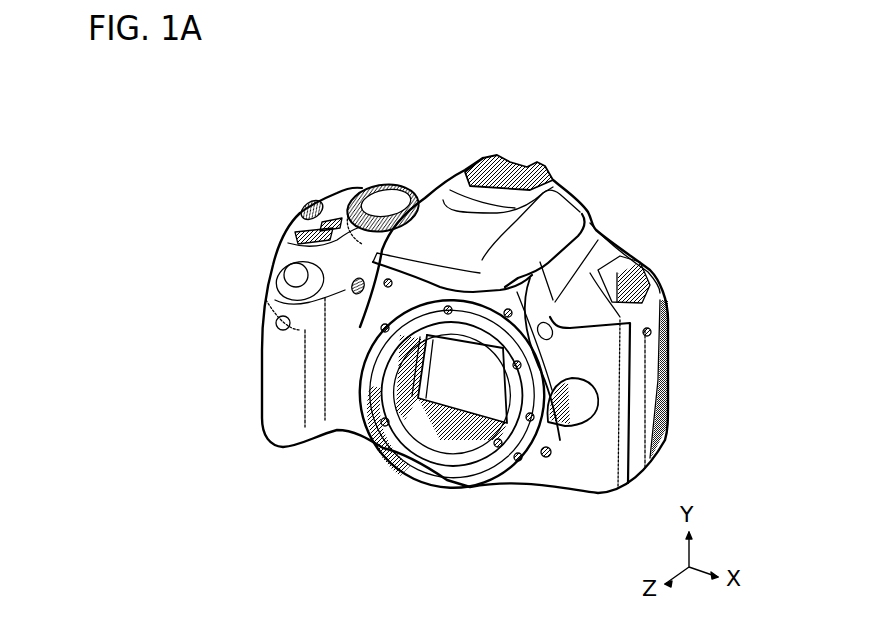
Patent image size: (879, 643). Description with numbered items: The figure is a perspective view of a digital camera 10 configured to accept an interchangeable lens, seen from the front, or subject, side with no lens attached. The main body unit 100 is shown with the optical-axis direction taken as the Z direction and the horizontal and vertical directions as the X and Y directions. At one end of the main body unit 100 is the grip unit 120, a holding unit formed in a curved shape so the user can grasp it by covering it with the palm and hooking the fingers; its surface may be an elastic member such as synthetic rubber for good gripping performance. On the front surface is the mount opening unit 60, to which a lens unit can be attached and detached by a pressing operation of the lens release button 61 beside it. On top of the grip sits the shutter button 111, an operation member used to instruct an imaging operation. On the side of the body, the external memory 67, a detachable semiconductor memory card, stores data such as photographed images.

The camera 10 is at (704, 94).
The main body unit 100 is at (615, 246).
The shutter button 111 is at (296, 275).
The grip unit 120 is at (284, 363).
The mount opening unit 60 is at (420, 472).
The lens release button 61 is at (545, 456).
The external memory 67 is at (657, 410).